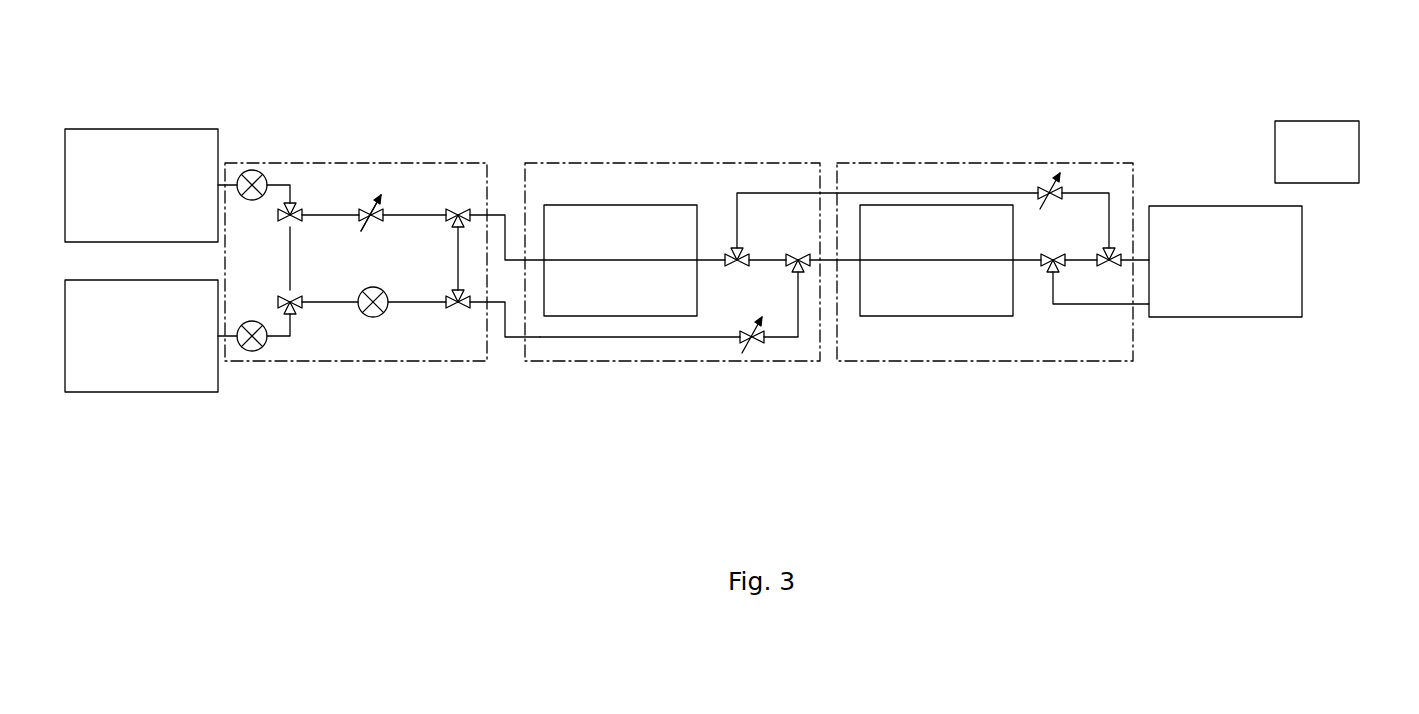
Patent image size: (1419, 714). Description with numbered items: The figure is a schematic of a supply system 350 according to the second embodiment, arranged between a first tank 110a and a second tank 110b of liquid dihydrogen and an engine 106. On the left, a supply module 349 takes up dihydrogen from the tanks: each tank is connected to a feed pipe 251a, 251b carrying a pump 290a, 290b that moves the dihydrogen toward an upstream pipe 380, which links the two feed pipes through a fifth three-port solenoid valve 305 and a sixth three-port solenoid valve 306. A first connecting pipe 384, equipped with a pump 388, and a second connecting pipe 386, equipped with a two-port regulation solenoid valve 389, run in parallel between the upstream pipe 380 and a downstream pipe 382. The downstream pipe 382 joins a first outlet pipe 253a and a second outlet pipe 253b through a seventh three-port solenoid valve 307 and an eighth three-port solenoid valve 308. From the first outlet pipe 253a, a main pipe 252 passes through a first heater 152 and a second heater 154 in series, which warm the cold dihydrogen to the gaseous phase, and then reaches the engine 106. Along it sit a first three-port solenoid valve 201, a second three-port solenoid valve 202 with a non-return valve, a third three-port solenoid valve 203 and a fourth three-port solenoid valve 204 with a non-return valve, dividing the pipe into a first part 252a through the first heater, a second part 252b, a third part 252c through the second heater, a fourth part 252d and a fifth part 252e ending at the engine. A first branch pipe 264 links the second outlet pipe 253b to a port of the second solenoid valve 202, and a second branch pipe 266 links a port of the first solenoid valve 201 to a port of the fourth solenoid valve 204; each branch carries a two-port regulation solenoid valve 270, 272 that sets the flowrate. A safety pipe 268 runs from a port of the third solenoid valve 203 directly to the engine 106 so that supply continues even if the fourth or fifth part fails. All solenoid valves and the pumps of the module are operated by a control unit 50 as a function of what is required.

The first tank 110a is at (65, 129).
The second tank 110b is at (95, 393).
The supply module 349 is at (296, 110).
The main pipe 252 is at (675, 259).
The supply system 350 is at (1152, 127).
The first heater 152 is at (620, 260).
The second heater 154 is at (936, 260).
The engine 106 is at (1225, 261).
The control unit 50 is at (1320, 183).
The pump 290a is at (262, 175).
The pump 290b is at (262, 346).
The pump 388 is at (387, 308).
The feed pipe 251a is at (231, 184).
The feed pipe 251b is at (228, 342).
The upstream pipe 380 is at (288, 265).
The downstream pipe 382 is at (457, 256).
The first connecting pipe 384 is at (338, 307).
The first outlet pipe 253a is at (503, 213).
The second outlet pipe 253b is at (493, 304).
The first branch pipe 264 is at (573, 338).
The sixth three-port solenoid valve 306 is at (281, 217).
The fifth three-port solenoid valve 305 is at (280, 302).
The eighth three-port solenoid valve 308 is at (450, 215).
The seventh three-port solenoid valve 307 is at (456, 309).
The second connecting pipe 386 is at (348, 212).
The two-port regulation solenoid valve 389 is at (378, 203).
The first part of main pipe 252a is at (635, 259).
The second part of main pipe 252b is at (767, 259).
The third part of main pipe 252c is at (953, 259).
The fourth part of main pipe 252d is at (1077, 266).
The fifth part of main pipe 252e is at (1140, 260).
The second branch pipe 266 is at (998, 192).
The safety pipe 268 is at (1145, 298).
The first three-port solenoid valve 201 is at (737, 266).
The second three-port solenoid valve 202 is at (800, 268).
The two-port regulation solenoid valve 270 is at (752, 345).
The third three-port solenoid valve 203 is at (1050, 273).
The fourth three-port solenoid valve 204 is at (1113, 268).
The two-port regulation solenoid valve 272 is at (1063, 193).